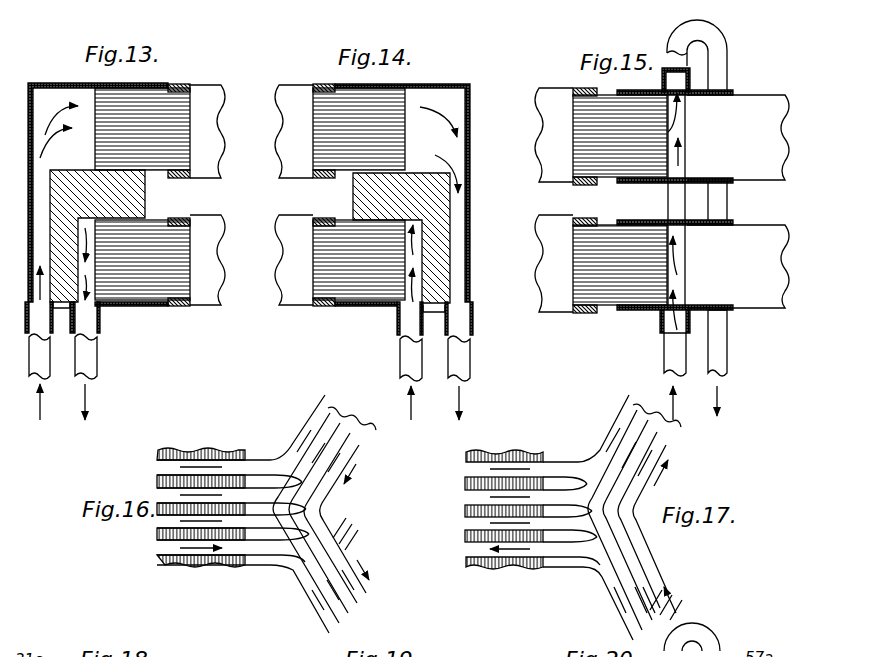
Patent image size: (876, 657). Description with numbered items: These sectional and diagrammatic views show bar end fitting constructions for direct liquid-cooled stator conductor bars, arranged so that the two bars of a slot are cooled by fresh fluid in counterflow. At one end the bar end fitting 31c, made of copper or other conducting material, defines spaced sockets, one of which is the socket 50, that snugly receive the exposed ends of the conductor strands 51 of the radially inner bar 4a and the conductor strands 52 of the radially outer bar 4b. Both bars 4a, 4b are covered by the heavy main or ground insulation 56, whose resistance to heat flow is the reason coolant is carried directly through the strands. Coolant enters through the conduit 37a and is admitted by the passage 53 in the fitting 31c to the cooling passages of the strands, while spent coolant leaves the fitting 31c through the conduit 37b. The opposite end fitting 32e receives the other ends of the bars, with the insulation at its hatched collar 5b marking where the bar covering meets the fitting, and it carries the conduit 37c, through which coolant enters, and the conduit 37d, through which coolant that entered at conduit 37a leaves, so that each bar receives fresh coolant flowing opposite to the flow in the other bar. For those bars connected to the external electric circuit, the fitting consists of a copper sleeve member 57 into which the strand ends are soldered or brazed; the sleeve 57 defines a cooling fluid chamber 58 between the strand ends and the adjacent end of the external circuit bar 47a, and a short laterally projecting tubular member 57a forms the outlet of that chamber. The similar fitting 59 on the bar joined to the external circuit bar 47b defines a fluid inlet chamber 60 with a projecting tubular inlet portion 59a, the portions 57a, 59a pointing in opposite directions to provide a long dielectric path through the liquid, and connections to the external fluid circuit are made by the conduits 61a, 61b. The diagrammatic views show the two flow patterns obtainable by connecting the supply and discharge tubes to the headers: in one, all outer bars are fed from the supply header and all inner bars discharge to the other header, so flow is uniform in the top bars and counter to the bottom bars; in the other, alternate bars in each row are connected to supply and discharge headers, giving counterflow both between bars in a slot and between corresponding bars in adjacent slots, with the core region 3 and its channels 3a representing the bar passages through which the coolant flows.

In FIG. 13, the bar end fitting 31c is at (31, 82).
In FIG. 13, the conductor strands 51 is at (152, 100).
In FIG. 14, the conductor strands 51 is at (359, 129).
In FIG. 15, the conductor strands 51 is at (620, 136).
In FIG. 13, the conductor bar 4a is at (217, 84).
In FIG. 14, the conductor bar 4a is at (296, 84).
In FIG. 15, the conductor bar 4a is at (531, 173).
In FIG. 16, the conductor bar 4a is at (340, 556).
In FIG. 17, the conductor bar 4a is at (660, 592).
In FIG. 13, the conductor bar 4b is at (211, 215).
In FIG. 14, the conductor bar 4b is at (289, 307).
In FIG. 15, the conductor bar 4b is at (541, 313).
In FIG. 16, the conductor bar 4b is at (362, 446).
In FIG. 17, the conductor bar 4b is at (667, 441).
In FIG. 13, the socket 50 is at (122, 230).
In FIG. 14, the socket 50 is at (401, 238).
In FIG. 13, the conductor strands 52 is at (170, 282).
In FIG. 14, the conductor strands 52 is at (359, 260).
In FIG. 15, the conductor strands 52 is at (624, 270).
In FIG. 13, the main or ground insulation 56 is at (174, 306).
In FIG. 15, the main or ground insulation 56 is at (585, 185).
In FIG. 13, the passage 53 is at (33, 292).
In FIG. 13, the conduit 37a is at (31, 364).
In FIG. 13, the conduit 37b is at (97, 364).
In FIG. 14, the end fitting 32e is at (468, 85).
In FIG. 14, the seal collar 5b is at (323, 181).
In FIG. 14, the conduit 37c is at (403, 366).
In FIG. 14, the conduit 37d is at (468, 366).
In FIG. 15, the copper sleeve member 57 is at (724, 97).
In FIG. 15, the tubular member 57a is at (692, 77).
In FIG. 15, the cooling fluid chamber 58 is at (684, 165).
In FIG. 15, the external circuit bar 47a is at (770, 89).
In FIG. 15, the external circuit bar 47b is at (767, 309).
In FIG. 15, the fitting 59 is at (708, 225).
In FIG. 15, the fluid inlet chamber 60 is at (686, 273).
In FIG. 15, the tubular inlet portion 59a is at (666, 330).
In FIG. 15, the conduit 61a is at (664, 367).
In FIG. 15, the conduit 61b is at (729, 366).
In FIG. 16, the heat exchanger core 3 is at (216, 452).
In FIG. 17, the heat exchanger core 3 is at (508, 569).
In FIG. 16, the core channels 3a is at (160, 490).
In FIG. 17, the core channels 3a is at (463, 550).